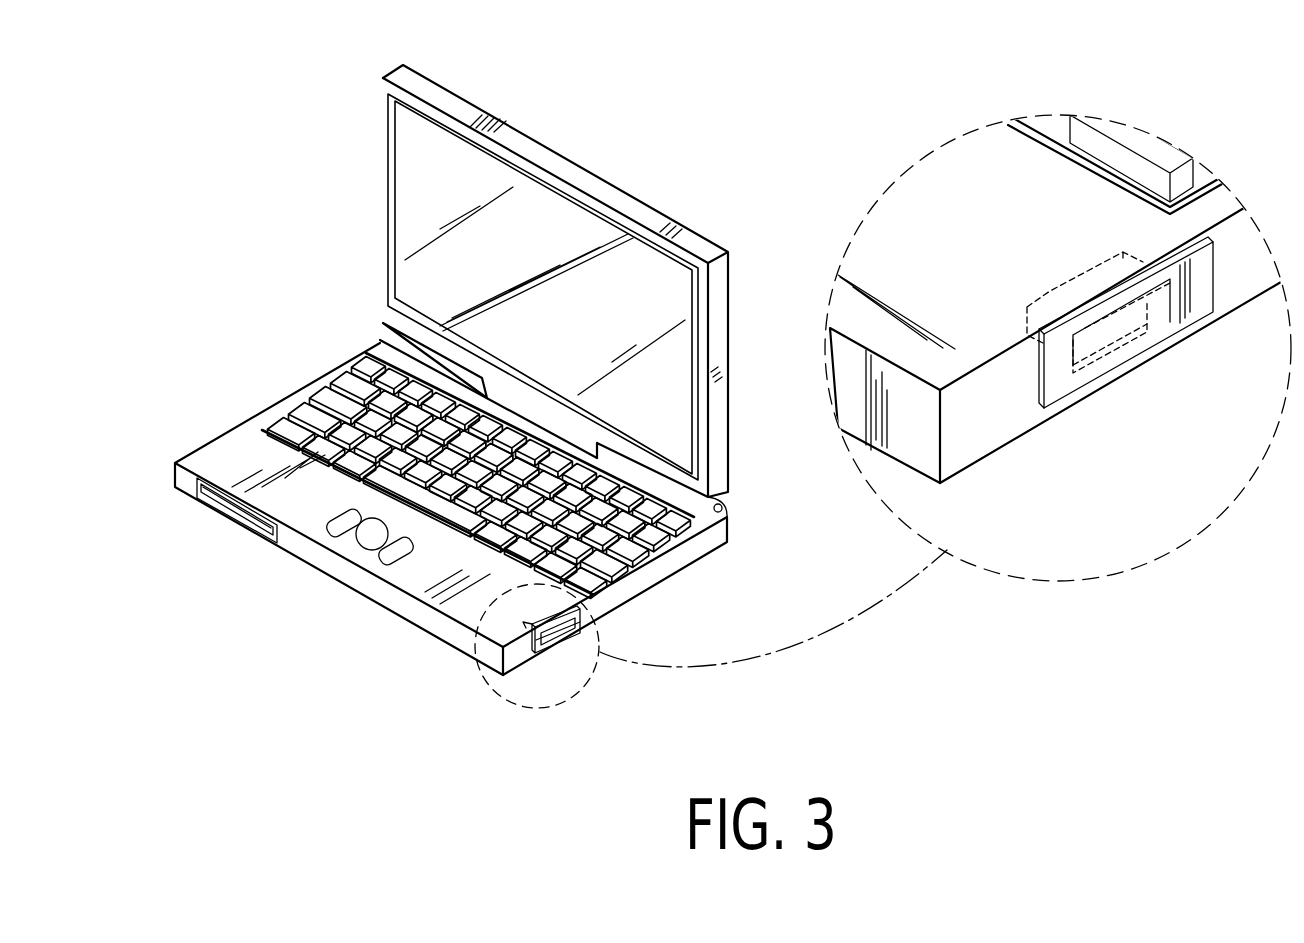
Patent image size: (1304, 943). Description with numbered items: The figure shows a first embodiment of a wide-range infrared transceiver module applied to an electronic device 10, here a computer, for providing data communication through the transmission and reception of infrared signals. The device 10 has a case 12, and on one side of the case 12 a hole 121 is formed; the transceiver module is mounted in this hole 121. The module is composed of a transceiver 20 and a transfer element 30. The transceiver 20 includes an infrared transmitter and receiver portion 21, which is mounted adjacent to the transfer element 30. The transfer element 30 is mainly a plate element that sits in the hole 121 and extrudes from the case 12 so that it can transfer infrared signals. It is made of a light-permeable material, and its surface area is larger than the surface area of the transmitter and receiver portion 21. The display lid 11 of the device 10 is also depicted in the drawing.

The electronic device 10 is at (566, 129).
The display 11 is at (412, 187).
The case 12 is at (428, 590).
The transceiver 20 is at (530, 626).
The infrared transmitter and receiver portion 21 is at (560, 630).
The hole 121 is at (530, 650).
The transfer element 30 is at (543, 655).